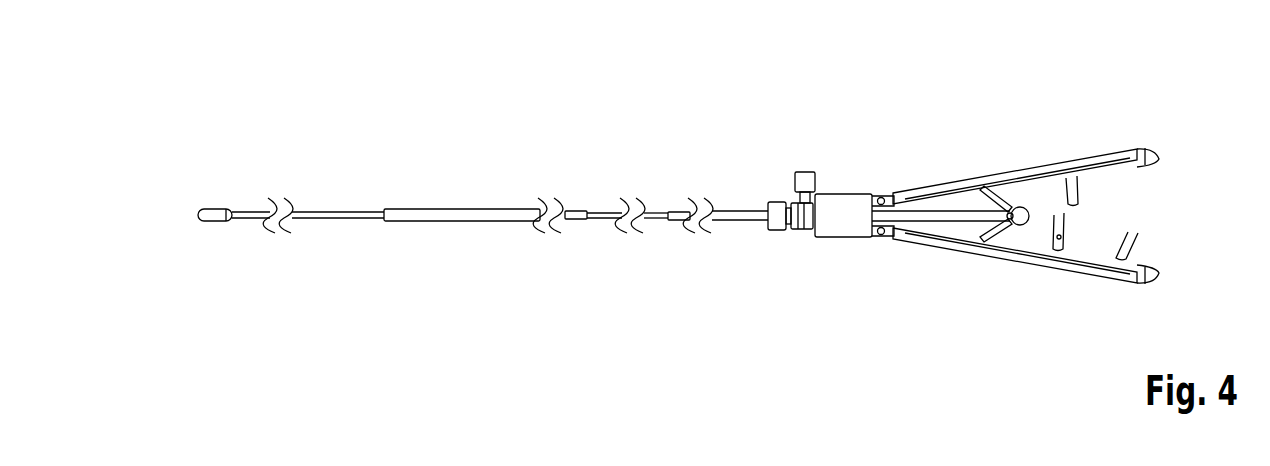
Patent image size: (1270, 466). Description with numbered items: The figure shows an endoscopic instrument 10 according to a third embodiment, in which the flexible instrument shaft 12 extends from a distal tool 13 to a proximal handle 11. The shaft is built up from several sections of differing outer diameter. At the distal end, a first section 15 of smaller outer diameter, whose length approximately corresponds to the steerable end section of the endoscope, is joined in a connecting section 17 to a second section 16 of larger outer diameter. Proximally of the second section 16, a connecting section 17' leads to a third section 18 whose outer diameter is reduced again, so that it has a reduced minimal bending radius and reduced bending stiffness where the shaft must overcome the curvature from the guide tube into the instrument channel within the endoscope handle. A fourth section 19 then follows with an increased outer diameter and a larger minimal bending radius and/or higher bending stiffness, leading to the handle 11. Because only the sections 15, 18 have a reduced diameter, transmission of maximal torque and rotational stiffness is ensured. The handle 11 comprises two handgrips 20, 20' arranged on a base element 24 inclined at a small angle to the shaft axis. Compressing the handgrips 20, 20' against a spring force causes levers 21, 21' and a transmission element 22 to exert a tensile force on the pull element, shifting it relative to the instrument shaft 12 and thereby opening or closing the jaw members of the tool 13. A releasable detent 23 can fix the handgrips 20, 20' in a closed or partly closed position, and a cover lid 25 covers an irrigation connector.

The endoscopic instrument 10 is at (765, 110).
The handle 11 is at (950, 132).
The instrument shaft 12 is at (340, 160).
The tool 13 is at (216, 235).
The first distal section 15 is at (315, 222).
The second section 16 is at (512, 222).
The connecting section 17 is at (411, 173).
The connecting section 17' is at (575, 179).
The third section 18 is at (613, 222).
The fourth section 19 is at (740, 210).
The handgrip 20 is at (1026, 145).
The handgrip 20' is at (1026, 283).
The lever 21 is at (990, 161).
The lever 21' is at (988, 273).
The transmission element 22 is at (928, 212).
The releasable detent 23 is at (1100, 208).
The base element 24 is at (808, 238).
The cover lid 25 is at (812, 173).